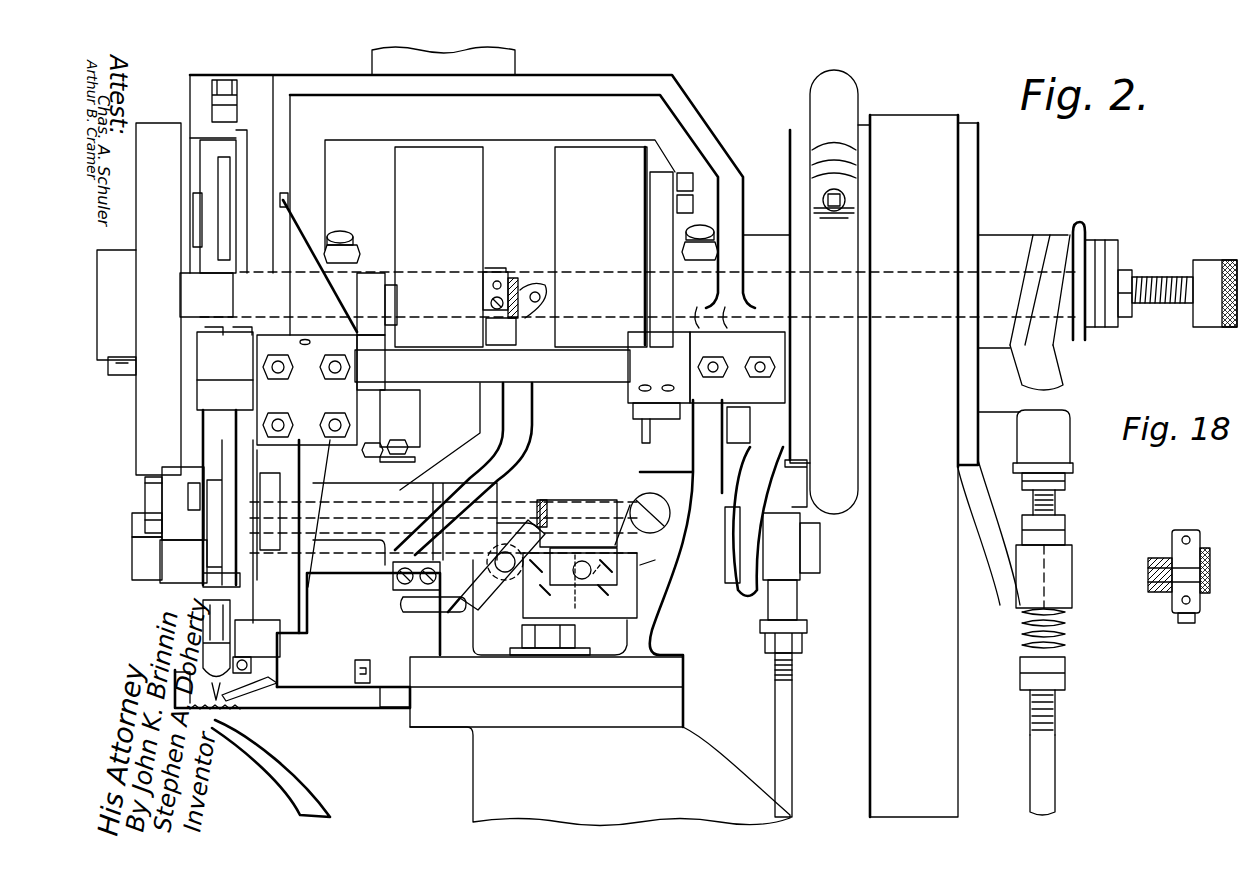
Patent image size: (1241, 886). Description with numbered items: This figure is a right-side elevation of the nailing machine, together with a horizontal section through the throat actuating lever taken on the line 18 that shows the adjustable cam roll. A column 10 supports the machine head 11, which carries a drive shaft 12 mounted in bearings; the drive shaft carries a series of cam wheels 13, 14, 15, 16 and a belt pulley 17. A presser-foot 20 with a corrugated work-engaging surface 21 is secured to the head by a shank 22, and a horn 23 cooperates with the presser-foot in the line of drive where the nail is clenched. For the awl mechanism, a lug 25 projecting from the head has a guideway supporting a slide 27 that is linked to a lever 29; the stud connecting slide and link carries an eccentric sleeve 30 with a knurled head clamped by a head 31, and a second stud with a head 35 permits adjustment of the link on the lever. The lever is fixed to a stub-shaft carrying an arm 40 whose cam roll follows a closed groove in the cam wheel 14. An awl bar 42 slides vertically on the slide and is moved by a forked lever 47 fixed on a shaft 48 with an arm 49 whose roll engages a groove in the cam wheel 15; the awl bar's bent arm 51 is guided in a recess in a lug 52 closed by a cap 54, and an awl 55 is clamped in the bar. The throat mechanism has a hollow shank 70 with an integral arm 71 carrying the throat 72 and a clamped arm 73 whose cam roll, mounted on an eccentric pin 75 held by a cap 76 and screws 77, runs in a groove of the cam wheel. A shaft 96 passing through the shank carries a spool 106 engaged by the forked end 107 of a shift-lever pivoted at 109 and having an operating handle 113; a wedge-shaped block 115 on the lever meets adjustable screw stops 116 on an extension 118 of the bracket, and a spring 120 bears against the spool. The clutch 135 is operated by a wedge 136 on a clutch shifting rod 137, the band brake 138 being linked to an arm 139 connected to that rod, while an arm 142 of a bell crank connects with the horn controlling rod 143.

In FIG. 2, the column 10 is at (585, 741).
In FIG. 2, the machine head 11 is at (690, 580).
In FIG. 2, the drive shaft 12 is at (758, 272).
In FIG. 2, the cam wheel 13 is at (139, 299).
In FIG. 2, the cam wheel 14 is at (439, 247).
In FIG. 2, the cam wheel 15 is at (601, 247).
In FIG. 2, the cam wheel 16 is at (795, 138).
In FIG. 2, the belt pulley 17 is at (972, 133).
In FIG. 2, the section line 18 is at (488, 305).
In FIG. 2, the presser-foot 20 is at (232, 708).
In FIG. 2, the corrugated work-engaging surface 21 is at (235, 715).
In FIG. 2, the shank 22 is at (345, 705).
In FIG. 2, the horn 23 is at (271, 768).
In FIG. 2, the lug 25 is at (300, 565).
In FIG. 2, the slide 27 is at (310, 600).
In FIG. 2, the lever 29 is at (230, 498).
In FIG. 2, the eccentric sleeve 30 is at (140, 552).
In FIG. 2, the head 31 is at (140, 522).
In FIG. 2, the head 35 is at (152, 487).
In FIG. 2, the arm 40 is at (385, 280).
In FIG. 2, the awl bar 42 is at (206, 295).
In FIG. 2, the forked lever 47 is at (225, 368).
In FIG. 2, the shaft 48 is at (492, 366).
In FIG. 2, the arm 49 is at (660, 222).
In FIG. 2, the arm 51 is at (225, 209).
In FIG. 2, the lug 52 is at (225, 190).
In FIG. 2, the cap 54 is at (205, 247).
In FIG. 2, the awl 55 is at (214, 705).
In FIG. 2, the hollow shank 70 is at (430, 615).
In FIG. 2, the arm 71 is at (265, 665).
In FIG. 2, the throat 72 is at (205, 660).
In FIG. 2, the arm 73 is at (463, 469).
In FIG. 2, the eccentric pin 75 is at (513, 285).
In FIG. 18, the eccentric pin 75 is at (1222, 560).
In FIG. 2, the cap 76 is at (497, 272).
In FIG. 18, the cap 76 is at (1200, 545).
In FIG. 2, the screws 77 is at (495, 280).
In FIG. 18, the screws 77 is at (1188, 538).
In FIG. 2, the shaft 96 is at (505, 530).
In FIG. 2, the spool 106 is at (600, 500).
In FIG. 2, the forked end 107 is at (590, 520).
In FIG. 2, the pivot 109 is at (665, 495).
In FIG. 2, the operating handle 113 is at (428, 615).
In FIG. 2, the wedge-shaped block 115 is at (560, 590).
In FIG. 2, the screw stops 116 is at (500, 582).
In FIG. 2, the extension 118 is at (580, 585).
In FIG. 2, the spring 120 is at (555, 500).
In FIG. 2, the clutch 135 is at (1040, 240).
In FIG. 2, the wedge 136 is at (1062, 375).
In FIG. 2, the clutch shifting rod 137 is at (1045, 752).
In FIG. 2, the band brake 138 is at (847, 103).
In FIG. 2, the arm 139 is at (1060, 578).
In FIG. 2, the arm 142 is at (748, 597).
In FIG. 2, the horn controlling rod 143 is at (790, 715).